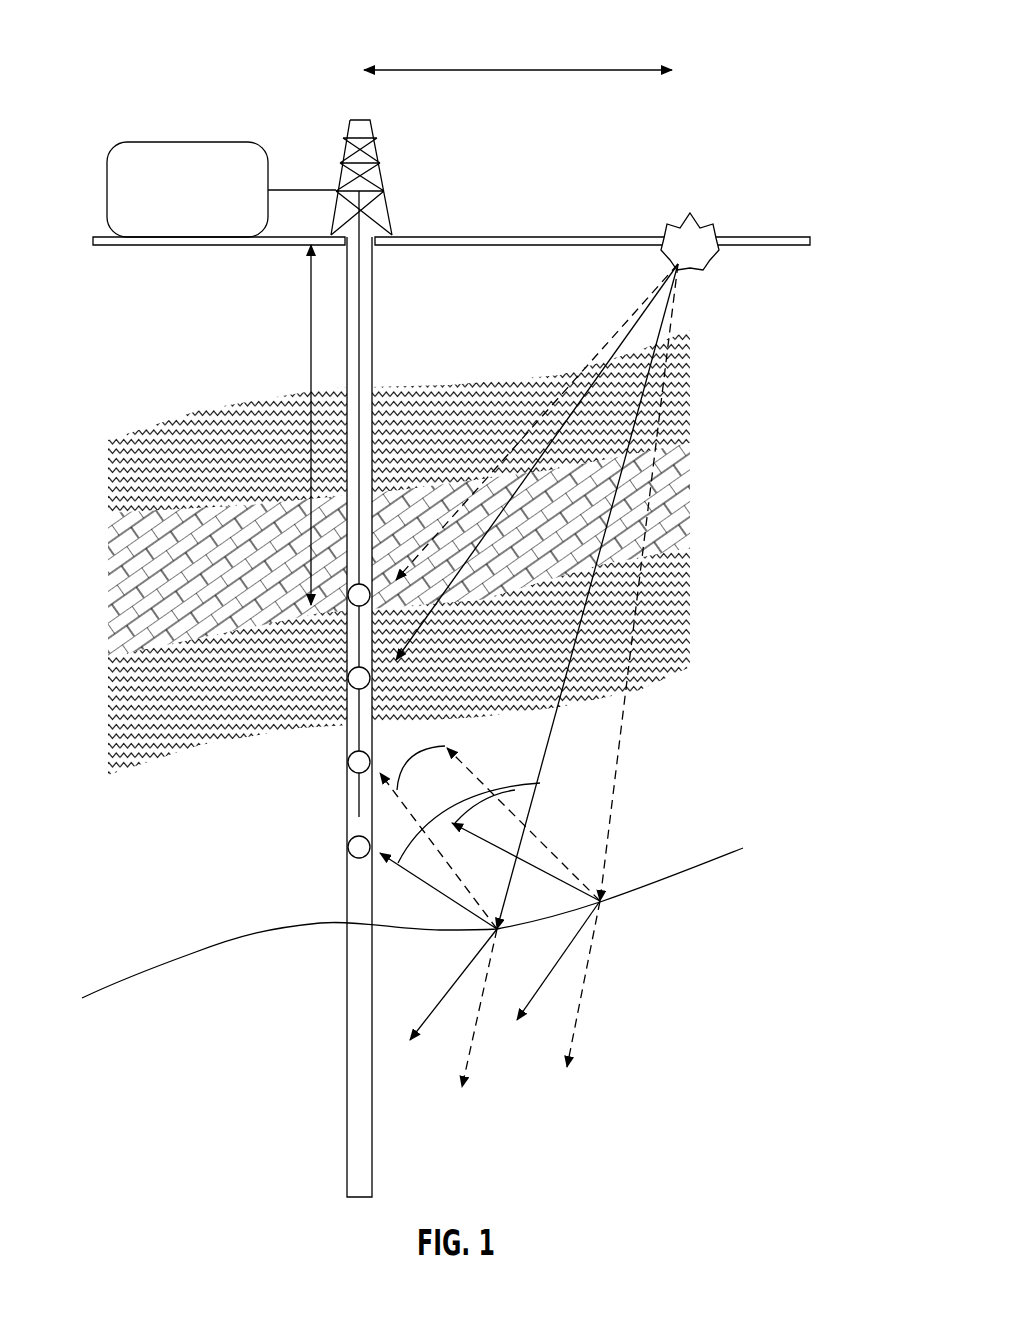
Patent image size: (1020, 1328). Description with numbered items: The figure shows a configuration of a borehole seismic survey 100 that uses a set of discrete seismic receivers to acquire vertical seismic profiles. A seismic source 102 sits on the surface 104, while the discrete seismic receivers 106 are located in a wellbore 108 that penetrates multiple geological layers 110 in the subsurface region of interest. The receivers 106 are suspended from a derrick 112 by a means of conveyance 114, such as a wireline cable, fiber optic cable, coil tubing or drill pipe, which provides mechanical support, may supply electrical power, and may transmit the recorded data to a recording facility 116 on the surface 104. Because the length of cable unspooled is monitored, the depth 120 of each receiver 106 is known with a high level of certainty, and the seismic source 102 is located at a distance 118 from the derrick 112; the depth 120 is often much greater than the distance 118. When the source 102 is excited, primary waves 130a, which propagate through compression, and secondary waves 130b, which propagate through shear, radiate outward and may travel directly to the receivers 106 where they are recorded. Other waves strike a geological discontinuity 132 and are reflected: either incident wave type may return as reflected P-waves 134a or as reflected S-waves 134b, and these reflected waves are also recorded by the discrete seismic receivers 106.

The configuration of a borehole seismic survey 100 is at (762, 27).
The seismic source 102 is at (690, 213).
The surface 104 is at (785, 237).
The discrete seismic receivers 106 is at (348, 847).
The wellbore 108 is at (347, 1093).
The geological layers 110 is at (127, 617).
The derrick 112 is at (340, 138).
The means of conveyance 114 is at (372, 317).
The recording facility 116 is at (177, 142).
The distance 118 is at (505, 70).
The depth 120 is at (311, 318).
The primary waves (P-waves) 130a is at (650, 350).
The secondary waves (S-waves) 130b is at (673, 313).
The geological discontinuity 132 is at (718, 860).
The reflected P-waves 134a is at (540, 783).
The reflected S-waves 134b is at (450, 747).